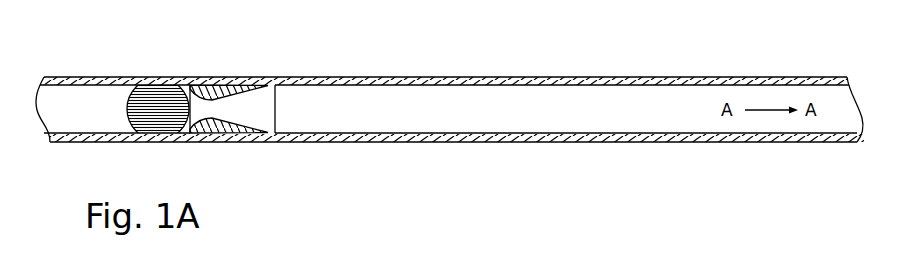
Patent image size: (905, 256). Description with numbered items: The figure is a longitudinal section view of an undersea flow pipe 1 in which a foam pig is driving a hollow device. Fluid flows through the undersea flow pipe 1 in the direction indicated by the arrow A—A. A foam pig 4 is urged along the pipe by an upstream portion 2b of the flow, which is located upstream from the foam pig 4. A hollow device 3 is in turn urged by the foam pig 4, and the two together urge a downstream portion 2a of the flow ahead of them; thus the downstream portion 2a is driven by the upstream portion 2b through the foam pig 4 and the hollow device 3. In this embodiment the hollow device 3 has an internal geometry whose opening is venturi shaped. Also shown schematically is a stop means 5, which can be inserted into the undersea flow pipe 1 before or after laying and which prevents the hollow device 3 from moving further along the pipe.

The undersea flow pipe 1 is at (605, 82).
The downstream portion of the flow 2a is at (566, 109).
The upstream portion of the flow 2b is at (115, 109).
The hollow device 3 is at (228, 95).
The foam pig 4 is at (157, 102).
The stop means 5 is at (470, 87).